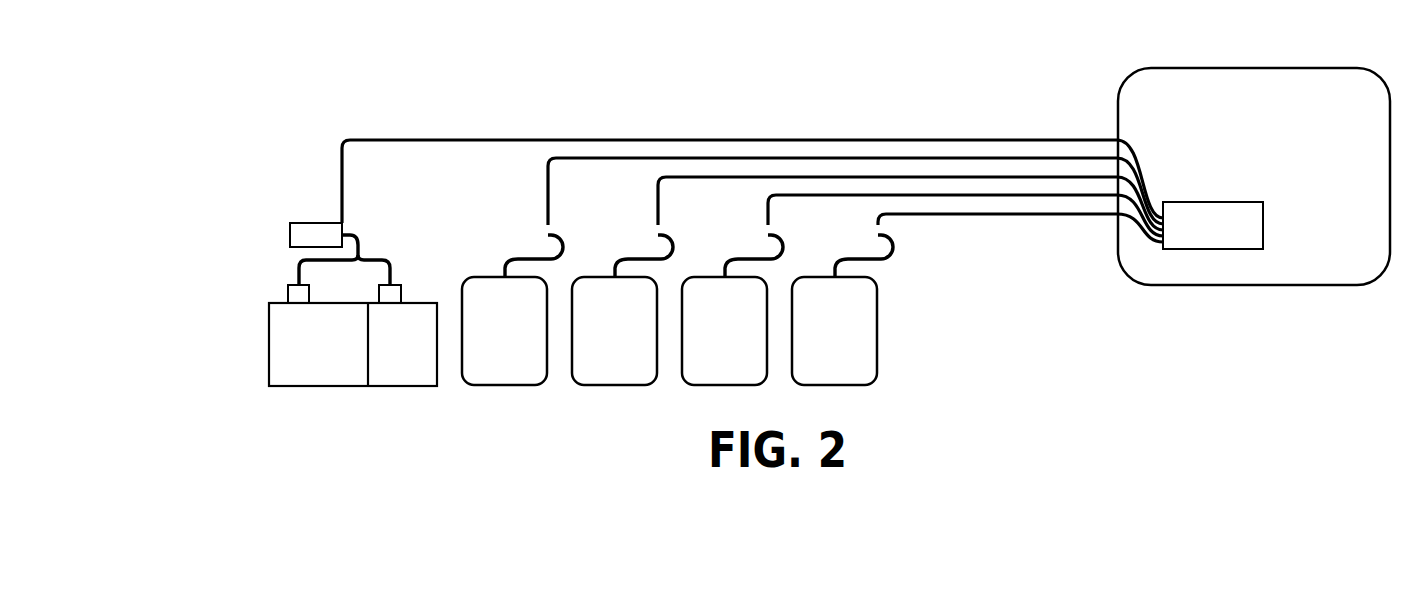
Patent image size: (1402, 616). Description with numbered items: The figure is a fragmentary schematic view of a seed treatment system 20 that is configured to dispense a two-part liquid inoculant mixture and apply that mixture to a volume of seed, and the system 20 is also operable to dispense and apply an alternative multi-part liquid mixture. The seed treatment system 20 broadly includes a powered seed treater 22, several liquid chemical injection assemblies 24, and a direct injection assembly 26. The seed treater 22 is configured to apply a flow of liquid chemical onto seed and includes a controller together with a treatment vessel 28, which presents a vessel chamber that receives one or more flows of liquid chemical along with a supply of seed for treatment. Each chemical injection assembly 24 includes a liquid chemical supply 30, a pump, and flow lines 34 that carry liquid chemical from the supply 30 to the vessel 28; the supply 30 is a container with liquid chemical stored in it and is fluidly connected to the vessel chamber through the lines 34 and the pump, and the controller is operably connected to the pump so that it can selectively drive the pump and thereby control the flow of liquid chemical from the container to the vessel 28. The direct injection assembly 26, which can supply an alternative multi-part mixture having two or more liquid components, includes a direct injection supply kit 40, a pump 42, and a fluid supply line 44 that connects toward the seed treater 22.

The seed treatment system 20 is at (1270, 36).
The powered seed treater 22 is at (1320, 286).
The liquid chemical injection assembly 24 is at (681, 416).
The direct injection assembly 26 is at (277, 424).
The treatment vessel 28 is at (1218, 249).
The liquid chemical supply 30 is at (613, 385).
The flow lines 34 is at (1000, 192).
The direct injection supply kit 40 is at (280, 350).
The pump 42 is at (313, 223).
The fluid supply line 44 is at (430, 138).